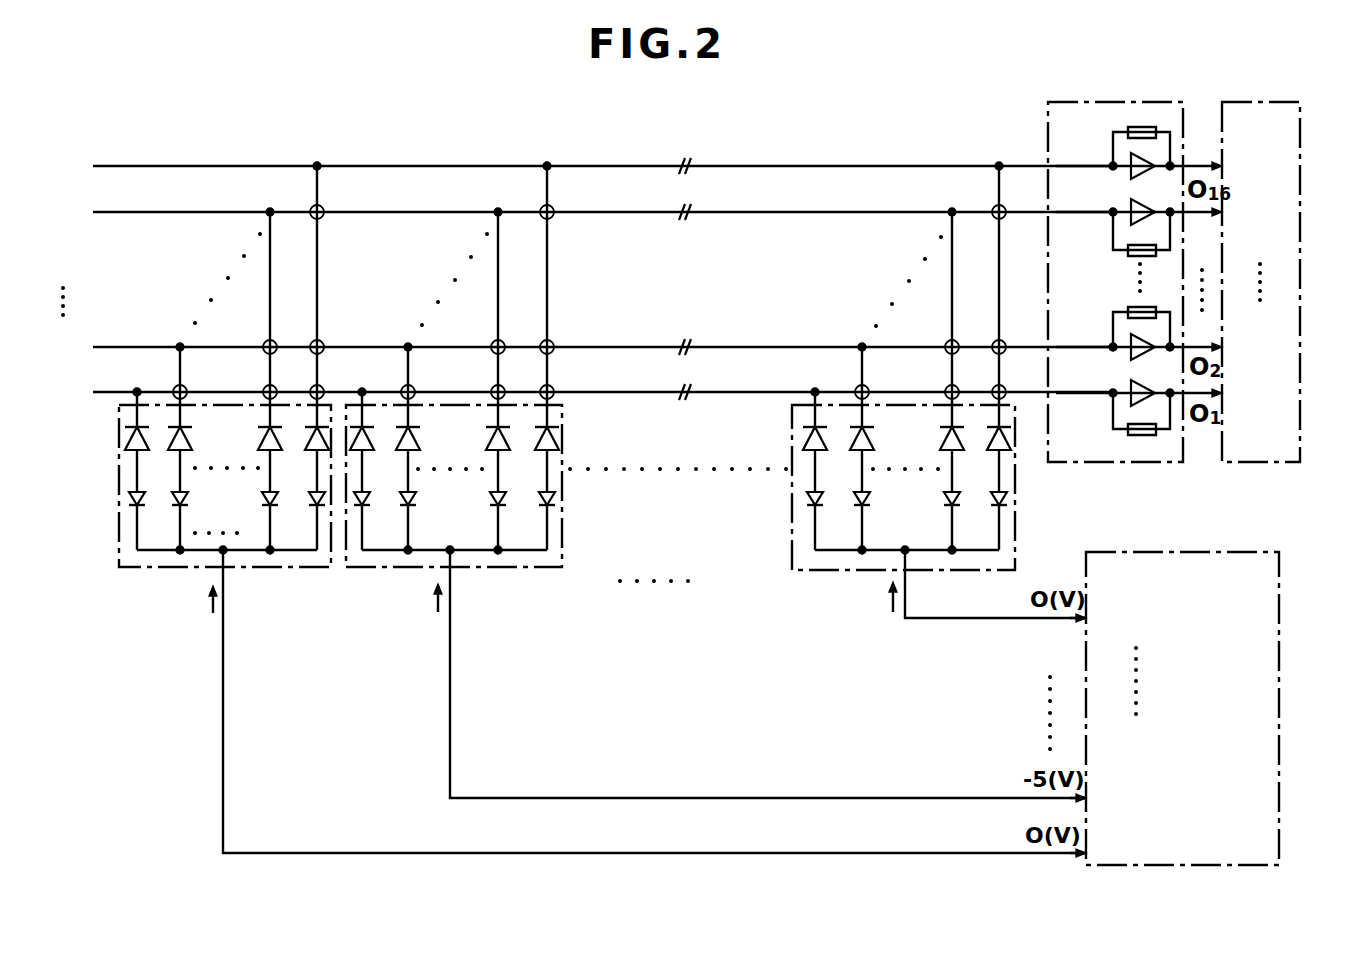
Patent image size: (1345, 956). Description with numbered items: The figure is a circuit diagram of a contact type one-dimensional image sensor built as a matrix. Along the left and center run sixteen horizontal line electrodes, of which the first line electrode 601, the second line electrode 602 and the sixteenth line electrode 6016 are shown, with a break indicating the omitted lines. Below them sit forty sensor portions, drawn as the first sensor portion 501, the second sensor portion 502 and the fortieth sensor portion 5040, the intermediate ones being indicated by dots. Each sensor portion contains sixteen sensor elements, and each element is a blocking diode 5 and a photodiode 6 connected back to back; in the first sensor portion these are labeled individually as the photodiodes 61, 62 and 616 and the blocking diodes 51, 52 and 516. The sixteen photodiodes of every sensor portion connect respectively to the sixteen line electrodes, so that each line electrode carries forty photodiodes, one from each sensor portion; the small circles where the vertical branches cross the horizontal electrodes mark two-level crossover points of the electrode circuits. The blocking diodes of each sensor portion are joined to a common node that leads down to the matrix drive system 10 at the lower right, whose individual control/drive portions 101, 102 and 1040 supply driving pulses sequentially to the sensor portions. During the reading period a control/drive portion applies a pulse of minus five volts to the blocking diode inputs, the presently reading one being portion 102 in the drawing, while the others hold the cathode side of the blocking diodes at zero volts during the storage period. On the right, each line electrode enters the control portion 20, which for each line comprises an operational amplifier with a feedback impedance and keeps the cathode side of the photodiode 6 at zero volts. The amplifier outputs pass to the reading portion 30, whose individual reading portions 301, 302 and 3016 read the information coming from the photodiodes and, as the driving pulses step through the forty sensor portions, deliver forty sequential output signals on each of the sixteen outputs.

The control/drive portion 10 is at (1163, 692).
The control portion 20 is at (1126, 266).
The reading portion 30 is at (1270, 266).
The blocking diode 5 is at (803, 498).
The photodiode 6 is at (543, 447).
The blocking diode 51 is at (126, 497).
The blocking diode 52 is at (172, 496).
The blocking diode 516 is at (310, 494).
The photodiode 61 is at (124, 440).
The photodiode 62 is at (172, 436).
The photodiode 616 is at (308, 436).
The sensor portion 501 is at (602, 509).
The sensor portion 502 is at (716, 482).
The sensor portion 5040 is at (939, 392).
The line electrode 601 is at (576, 391).
The line electrode 602 is at (576, 346).
The line electrode 6016 is at (576, 165).
The reading portion 301 is at (1222, 395).
The reading portion 302 is at (1222, 349).
The reading portion 3016 is at (1228, 167).
The control/drive portion 101 is at (1103, 850).
The control/drive portion 102 is at (1103, 799).
The control/drive portion 1040 is at (1109, 619).